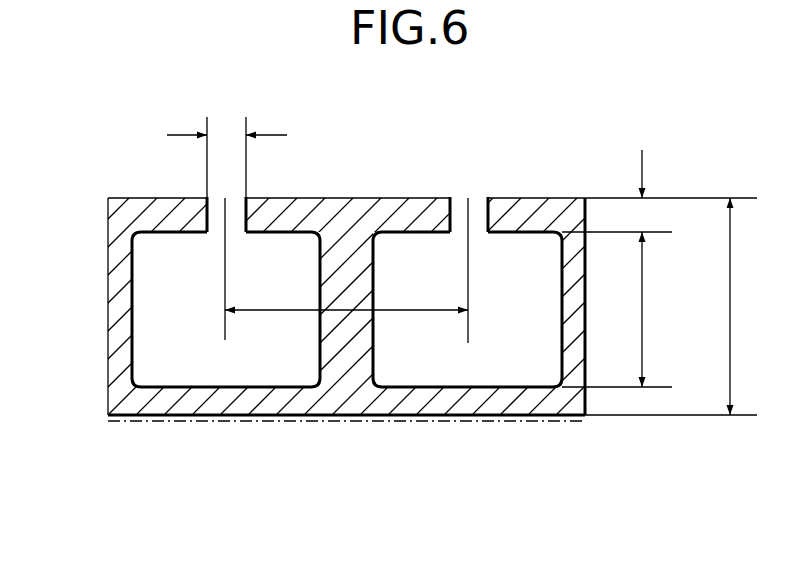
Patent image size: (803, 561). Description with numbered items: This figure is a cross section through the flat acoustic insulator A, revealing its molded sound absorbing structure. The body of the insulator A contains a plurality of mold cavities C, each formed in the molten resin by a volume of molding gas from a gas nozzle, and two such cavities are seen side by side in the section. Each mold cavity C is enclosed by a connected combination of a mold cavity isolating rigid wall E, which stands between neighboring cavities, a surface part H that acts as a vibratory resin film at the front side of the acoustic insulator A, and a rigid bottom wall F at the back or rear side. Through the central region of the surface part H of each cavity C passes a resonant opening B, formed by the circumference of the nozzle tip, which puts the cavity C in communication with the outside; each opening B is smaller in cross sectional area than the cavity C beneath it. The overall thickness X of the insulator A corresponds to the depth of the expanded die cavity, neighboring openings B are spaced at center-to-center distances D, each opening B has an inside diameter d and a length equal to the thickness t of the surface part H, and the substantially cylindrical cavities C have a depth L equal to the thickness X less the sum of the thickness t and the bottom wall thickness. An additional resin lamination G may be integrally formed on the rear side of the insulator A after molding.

The flat acoustic insulator A is at (104, 396).
The resonant opening B is at (240, 207).
The mold cavity C is at (284, 376).
The center-to-center distance D is at (411, 314).
The mold cavity isolating rigid wall E is at (323, 247).
The rigid bottom wall F is at (220, 403).
The resin lamination G is at (455, 421).
The surface part H is at (140, 207).
The inside diameter d is at (226, 132).
The thickness of surface part t is at (671, 174).
The depth of mold cavity L is at (617, 309).
The thickness of acoustic insulator X is at (671, 306).